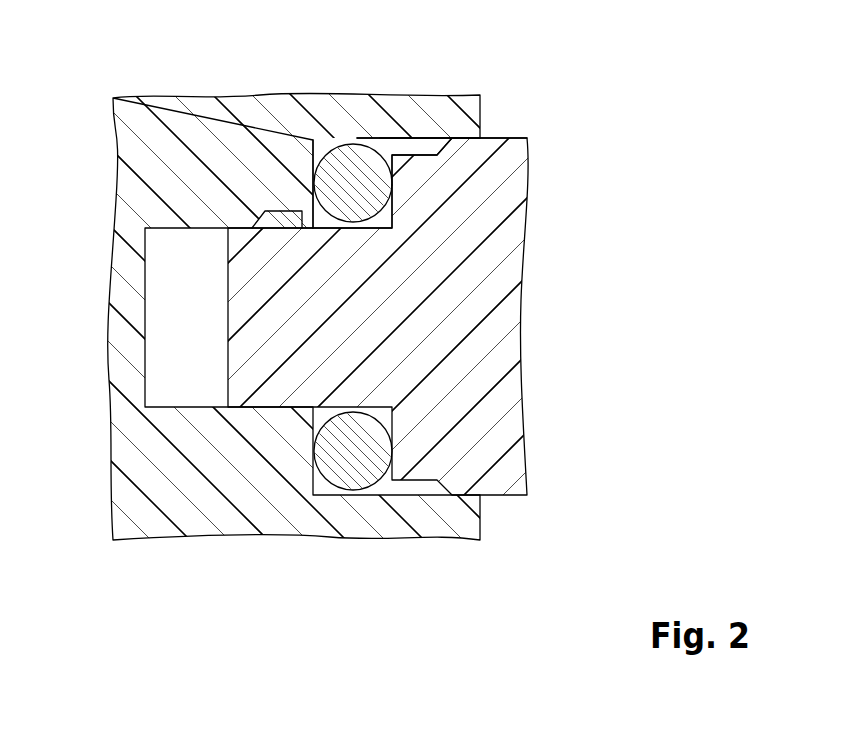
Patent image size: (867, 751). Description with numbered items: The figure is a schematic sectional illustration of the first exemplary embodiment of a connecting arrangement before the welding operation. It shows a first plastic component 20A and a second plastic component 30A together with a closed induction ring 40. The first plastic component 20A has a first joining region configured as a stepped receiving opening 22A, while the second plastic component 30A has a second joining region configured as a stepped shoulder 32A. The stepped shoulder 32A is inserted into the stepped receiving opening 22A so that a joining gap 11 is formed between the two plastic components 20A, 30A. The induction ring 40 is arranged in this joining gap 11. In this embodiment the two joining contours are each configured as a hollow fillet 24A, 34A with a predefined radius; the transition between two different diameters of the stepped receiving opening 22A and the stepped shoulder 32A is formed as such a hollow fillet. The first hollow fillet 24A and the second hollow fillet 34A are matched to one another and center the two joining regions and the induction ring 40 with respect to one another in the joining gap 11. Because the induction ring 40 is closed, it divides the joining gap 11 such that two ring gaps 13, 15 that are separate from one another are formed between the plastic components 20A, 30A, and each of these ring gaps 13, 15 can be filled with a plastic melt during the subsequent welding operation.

The first plastic component 20A is at (133, 144).
The second plastic component 30A is at (515, 466).
The closed induction ring 40 is at (352, 465).
The ring gap 15 is at (284, 220).
The stepped receiving opening 22A is at (315, 112).
The hollow fillet 24A is at (364, 193).
The joining gap 11 is at (396, 110).
The ring gap 13 is at (430, 147).
The hollow fillet 34A is at (345, 168).
The stepped shoulder 32A is at (390, 238).